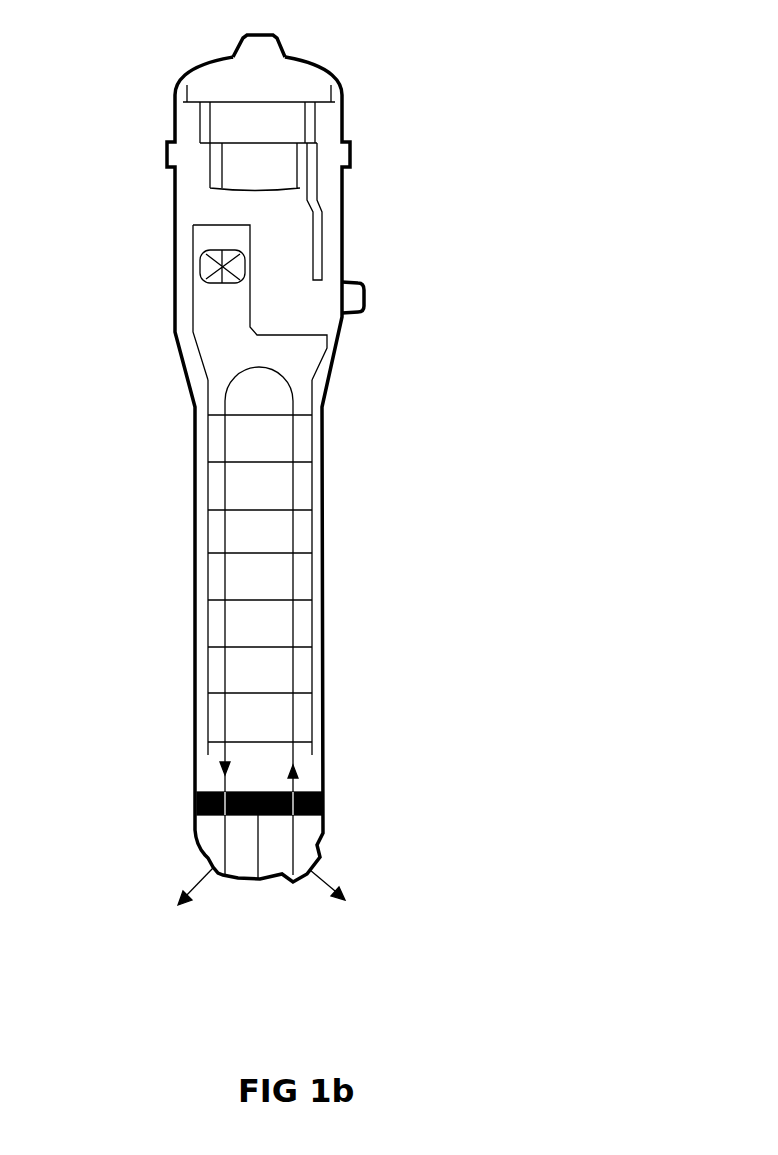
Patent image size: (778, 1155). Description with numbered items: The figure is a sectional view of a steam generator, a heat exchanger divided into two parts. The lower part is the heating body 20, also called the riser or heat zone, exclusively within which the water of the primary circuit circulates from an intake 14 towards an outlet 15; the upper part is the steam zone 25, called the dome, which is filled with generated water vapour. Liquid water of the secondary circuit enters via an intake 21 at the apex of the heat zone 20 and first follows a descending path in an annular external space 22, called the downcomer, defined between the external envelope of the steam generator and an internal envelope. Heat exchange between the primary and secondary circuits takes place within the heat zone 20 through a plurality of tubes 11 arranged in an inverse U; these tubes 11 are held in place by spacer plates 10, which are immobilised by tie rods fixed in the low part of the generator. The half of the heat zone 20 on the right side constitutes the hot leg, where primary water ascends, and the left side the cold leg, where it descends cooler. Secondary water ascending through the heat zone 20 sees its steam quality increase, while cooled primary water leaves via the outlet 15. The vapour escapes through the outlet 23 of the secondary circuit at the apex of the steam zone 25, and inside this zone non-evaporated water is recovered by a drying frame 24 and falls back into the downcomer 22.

The spacer plates 10 is at (258, 692).
The tubes 11 is at (287, 480).
The intake 14 is at (353, 905).
The outlet 15 is at (169, 905).
The heating body 20 is at (475, 305).
The intake 21 is at (365, 298).
The annular external space 22 is at (193, 718).
The outlet 23 is at (305, 48).
The drying frame 24 is at (318, 162).
The steam zone 25 is at (127, 62).